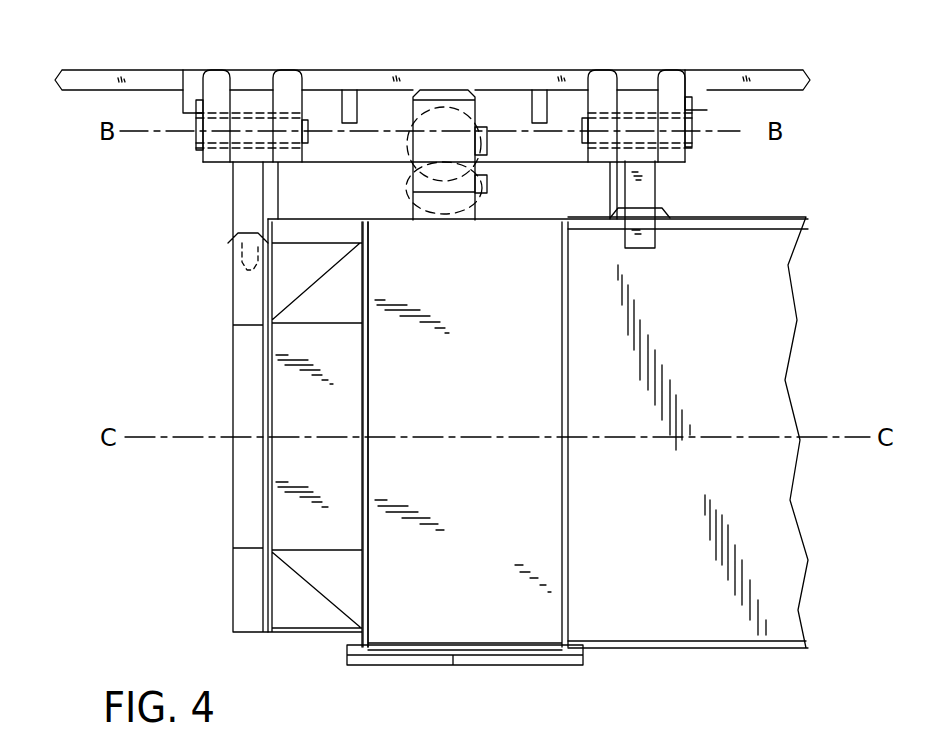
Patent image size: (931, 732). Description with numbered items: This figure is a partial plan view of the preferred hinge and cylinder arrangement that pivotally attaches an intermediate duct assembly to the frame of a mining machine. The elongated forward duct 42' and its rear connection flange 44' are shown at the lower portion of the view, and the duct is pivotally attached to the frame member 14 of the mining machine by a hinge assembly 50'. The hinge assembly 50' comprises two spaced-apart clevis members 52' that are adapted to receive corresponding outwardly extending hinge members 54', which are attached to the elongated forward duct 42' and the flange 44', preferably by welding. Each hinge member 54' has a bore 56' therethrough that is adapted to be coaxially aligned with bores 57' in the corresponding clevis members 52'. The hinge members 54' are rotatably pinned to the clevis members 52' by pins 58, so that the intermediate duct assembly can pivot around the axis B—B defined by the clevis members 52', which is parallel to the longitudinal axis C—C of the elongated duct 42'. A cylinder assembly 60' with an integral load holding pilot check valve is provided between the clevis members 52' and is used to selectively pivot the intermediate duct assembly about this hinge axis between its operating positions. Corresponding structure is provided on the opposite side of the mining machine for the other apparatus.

The frame member 14 is at (537, 78).
The clevis members 52' is at (496, 91).
The bore 56' is at (461, 144).
The bores 57' is at (453, 91).
The pins 58 is at (306, 143).
The cylinder assembly 60' is at (495, 155).
The hinge members 54' is at (450, 396).
The hinge assembly 50' is at (534, 164).
The rear connection flange 44' is at (269, 450).
The elongated forward duct 42' is at (688, 432).